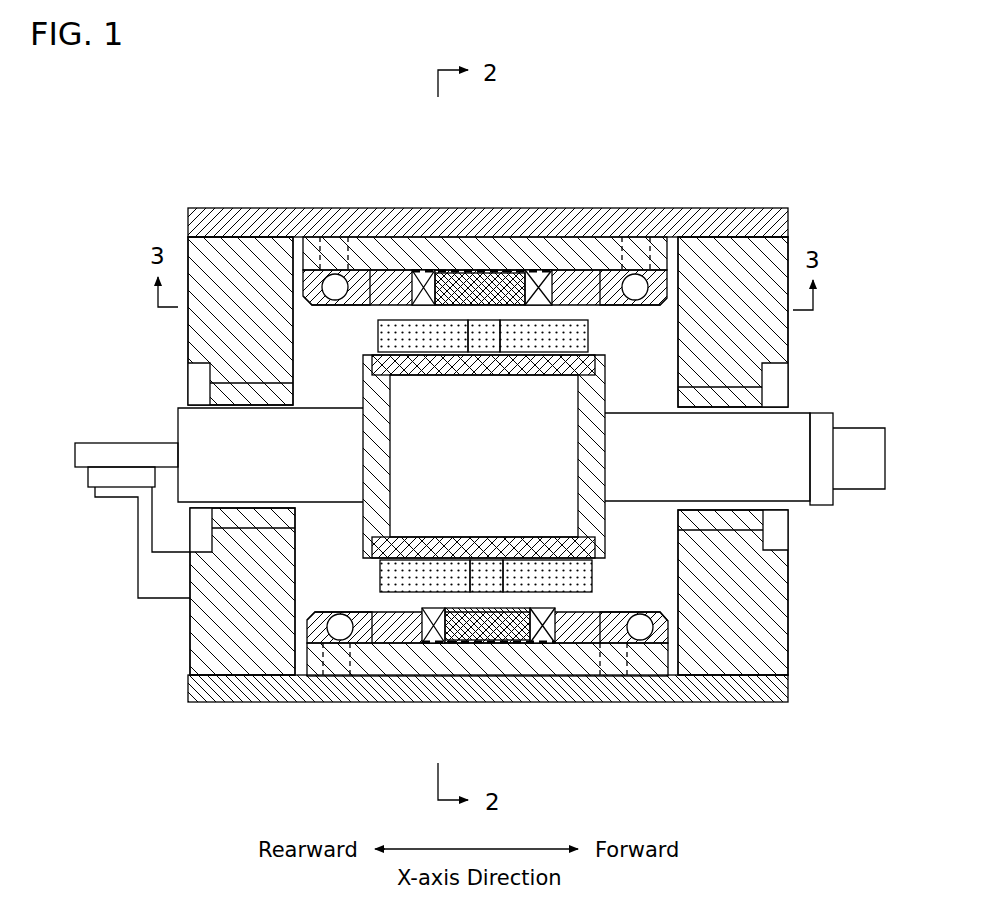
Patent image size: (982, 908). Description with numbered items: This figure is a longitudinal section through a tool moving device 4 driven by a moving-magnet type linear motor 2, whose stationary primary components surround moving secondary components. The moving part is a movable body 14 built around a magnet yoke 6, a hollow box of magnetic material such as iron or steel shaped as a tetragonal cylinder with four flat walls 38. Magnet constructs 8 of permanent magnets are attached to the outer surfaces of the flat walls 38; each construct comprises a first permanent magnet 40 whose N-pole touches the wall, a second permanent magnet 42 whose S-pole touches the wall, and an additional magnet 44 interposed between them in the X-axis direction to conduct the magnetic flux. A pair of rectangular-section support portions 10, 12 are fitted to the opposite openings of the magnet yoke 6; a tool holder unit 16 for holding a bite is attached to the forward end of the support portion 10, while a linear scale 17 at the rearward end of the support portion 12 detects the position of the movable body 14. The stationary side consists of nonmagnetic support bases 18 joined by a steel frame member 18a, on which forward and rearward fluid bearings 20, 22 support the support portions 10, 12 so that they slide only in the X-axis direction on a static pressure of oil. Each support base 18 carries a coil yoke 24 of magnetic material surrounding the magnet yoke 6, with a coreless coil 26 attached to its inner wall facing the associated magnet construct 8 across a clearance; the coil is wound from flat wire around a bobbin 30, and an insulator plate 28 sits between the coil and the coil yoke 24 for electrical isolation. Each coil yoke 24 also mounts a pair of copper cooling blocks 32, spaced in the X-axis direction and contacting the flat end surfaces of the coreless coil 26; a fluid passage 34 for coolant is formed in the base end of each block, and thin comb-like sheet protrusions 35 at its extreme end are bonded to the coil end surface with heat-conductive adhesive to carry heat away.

The linear motor 2 is at (287, 195).
The tool moving device 4 is at (150, 186).
The magnet yoke 6 is at (592, 566).
The magnet constructs 8 is at (563, 428).
The support portion 10 is at (772, 478).
The support portion 12 is at (200, 443).
The movable body 14 is at (170, 398).
The tool holder unit 16 is at (850, 448).
The linear scale 17 is at (108, 543).
The support bases 18 is at (692, 220).
The frame member 18a is at (207, 645).
The forward fluid bearing 20 is at (790, 370).
The rearward fluid bearing 22 is at (235, 388).
The coil yoke 24 is at (560, 258).
The coreless coil 26 is at (468, 278).
The insulator plate 28 is at (527, 272).
The bobbin 30 is at (500, 272).
The cooling block 32 is at (360, 268).
The fluid passage 34 is at (336, 294).
The sheet-like protrusions 35 is at (371, 268).
The flat wall 38 is at (605, 382).
The first permanent magnet 40 is at (548, 341).
The second permanent magnet 42 is at (418, 341).
The additional magnet 44 is at (484, 336).